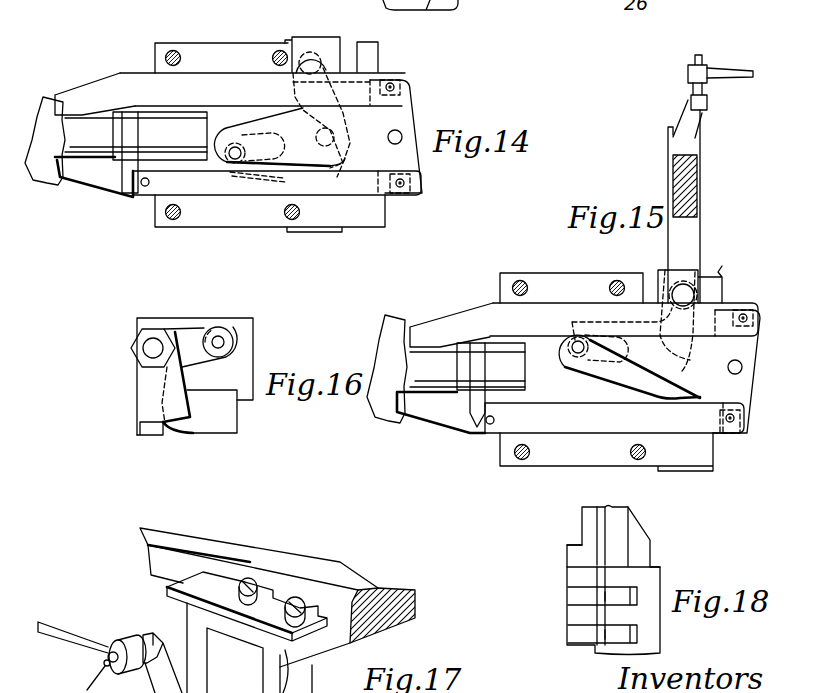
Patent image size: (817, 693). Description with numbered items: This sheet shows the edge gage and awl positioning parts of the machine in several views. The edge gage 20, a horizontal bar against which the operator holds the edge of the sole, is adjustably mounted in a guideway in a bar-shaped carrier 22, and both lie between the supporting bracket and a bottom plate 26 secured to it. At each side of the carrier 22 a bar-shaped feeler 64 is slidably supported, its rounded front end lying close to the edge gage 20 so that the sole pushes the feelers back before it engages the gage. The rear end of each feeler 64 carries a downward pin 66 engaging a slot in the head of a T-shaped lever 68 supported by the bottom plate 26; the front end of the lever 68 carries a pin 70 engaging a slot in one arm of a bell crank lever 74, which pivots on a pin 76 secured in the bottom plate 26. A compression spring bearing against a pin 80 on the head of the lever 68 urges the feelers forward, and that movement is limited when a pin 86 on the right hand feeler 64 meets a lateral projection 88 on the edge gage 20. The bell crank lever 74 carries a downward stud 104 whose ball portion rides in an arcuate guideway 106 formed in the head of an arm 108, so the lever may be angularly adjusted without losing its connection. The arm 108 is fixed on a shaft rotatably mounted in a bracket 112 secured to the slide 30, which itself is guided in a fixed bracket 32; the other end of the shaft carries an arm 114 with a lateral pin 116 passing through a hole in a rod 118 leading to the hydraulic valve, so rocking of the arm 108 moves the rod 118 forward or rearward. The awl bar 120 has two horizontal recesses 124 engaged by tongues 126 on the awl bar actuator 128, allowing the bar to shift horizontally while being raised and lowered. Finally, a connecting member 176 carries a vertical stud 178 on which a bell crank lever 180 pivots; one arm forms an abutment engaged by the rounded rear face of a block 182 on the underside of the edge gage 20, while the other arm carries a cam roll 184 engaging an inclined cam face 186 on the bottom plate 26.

In FIG. 14, the edge gage 20 is at (80, 137).
In FIG. 15, the edge gage 20 is at (427, 377).
In FIG. 14, the carrier 22 is at (163, 153).
In FIG. 15, the carrier 22 is at (467, 366).
In FIG. 14, the bottom plate 26 is at (233, 217).
In FIG. 15, the bottom plate 26 is at (568, 458).
In FIG. 17, the slide 30 is at (177, 597).
In FIG. 17, the fixed bracket 32 is at (413, 600).
In FIG. 14, the feeler 64 is at (65, 97).
In FIG. 15, the feeler 64 is at (417, 330).
In FIG. 14, the pin 66 is at (396, 87).
In FIG. 15, the pin 66 is at (745, 307).
In FIG. 14, the T-shaped lever 68 is at (412, 157).
In FIG. 15, the T-shaped lever 68 is at (747, 347).
In FIG. 14, the pin 70 is at (232, 156).
In FIG. 15, the pin 70 is at (573, 353).
In FIG. 14, the bell crank lever 74 is at (267, 120).
In FIG. 15, the bell crank lever 74 is at (630, 387).
In FIG. 14, the pin 76 is at (333, 134).
In FIG. 14, the pin 80 is at (400, 133).
In FIG. 15, the pin 80 is at (740, 370).
In FIG. 14, the pin 86 is at (146, 187).
In FIG. 15, the pin 86 is at (490, 420).
In FIG. 14, the lateral projection 88 is at (132, 194).
In FIG. 15, the lateral projection 88 is at (475, 415).
In FIG. 14, the stud 104 is at (303, 70).
In FIG. 15, the stud 104 is at (633, 321).
In FIG. 14, the arcuate guideway 106 is at (300, 40).
In FIG. 15, the arcuate guideway 106 is at (690, 283).
In FIG. 14, the arm 108 is at (333, 43).
In FIG. 15, the arm 108 is at (707, 270).
In FIG. 15, the bracket 112 is at (693, 175).
In FIG. 15, the arm 114 is at (697, 117).
In FIG. 15, the lateral pin 116 is at (703, 56).
In FIG. 15, the rod 118 is at (747, 72).
In FIG. 17, the rod 118 is at (72, 642).
In FIG. 18, the awl bar 120 is at (653, 650).
In FIG. 18, the horizontal recess 124 is at (637, 630).
In FIG. 18, the tongue 126 is at (610, 635).
In FIG. 18, the awl bar actuator 128 is at (577, 552).
In FIG. 16, the connecting member 176 is at (143, 398).
In FIG. 16, the vertical stud 178 is at (152, 338).
In FIG. 16, the bell crank lever 180 is at (190, 335).
In FIG. 16, the block 182 is at (217, 427).
In FIG. 16, the cam roll 184 is at (243, 327).
In FIG. 16, the cam face 186 is at (242, 350).